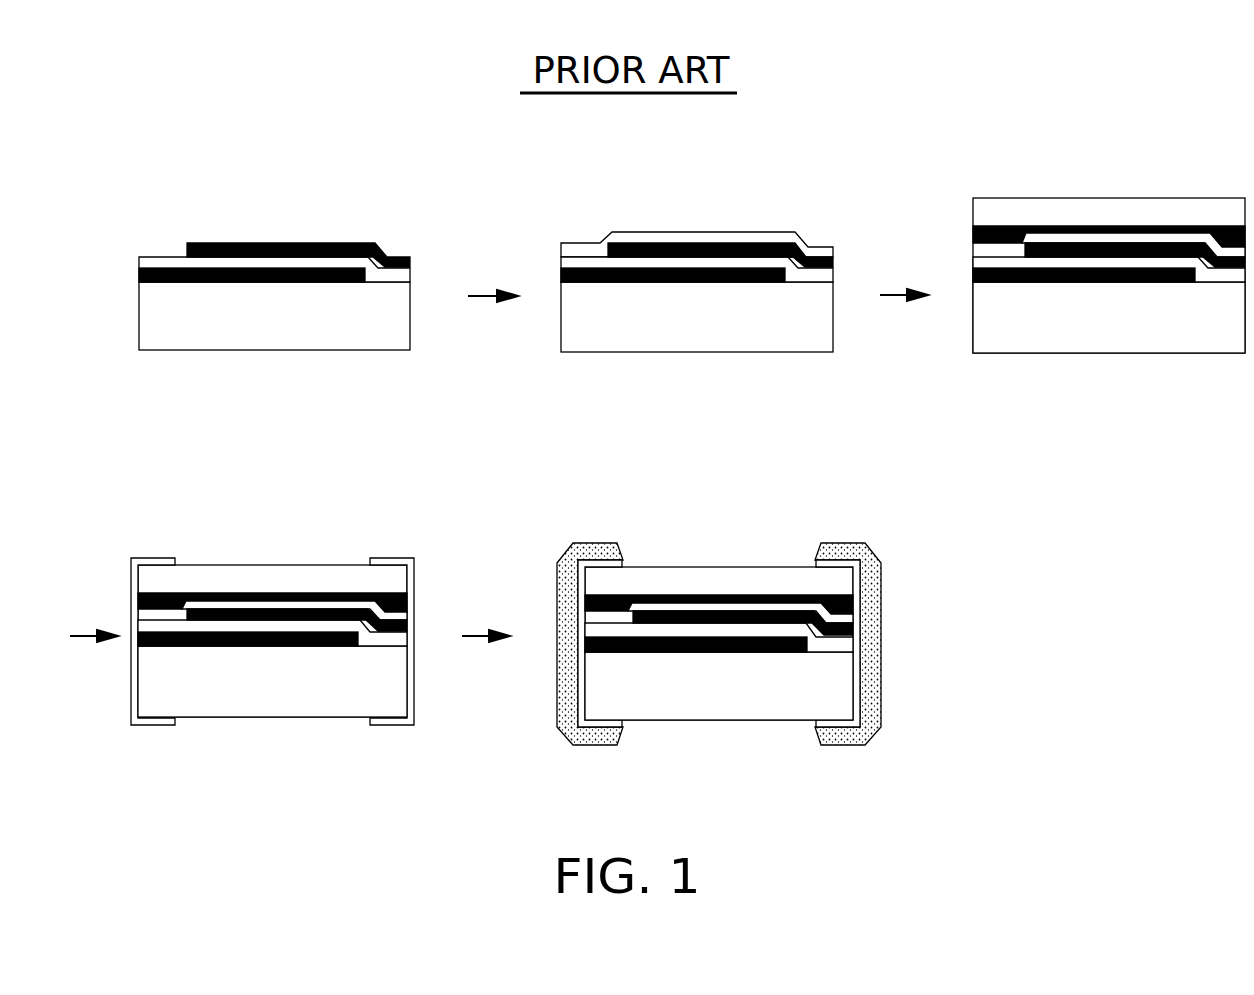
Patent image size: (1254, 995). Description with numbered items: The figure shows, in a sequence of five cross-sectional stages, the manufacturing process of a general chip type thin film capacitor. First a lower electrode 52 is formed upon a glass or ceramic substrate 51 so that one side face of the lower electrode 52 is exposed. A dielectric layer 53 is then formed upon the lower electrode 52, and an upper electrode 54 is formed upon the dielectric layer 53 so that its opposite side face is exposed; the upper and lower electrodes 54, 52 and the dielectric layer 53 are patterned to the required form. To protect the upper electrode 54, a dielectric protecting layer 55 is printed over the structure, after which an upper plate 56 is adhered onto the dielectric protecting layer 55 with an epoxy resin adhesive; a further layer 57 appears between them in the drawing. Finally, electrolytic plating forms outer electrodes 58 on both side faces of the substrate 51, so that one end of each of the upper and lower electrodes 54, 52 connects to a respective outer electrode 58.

The substrate 51 is at (306, 334).
The lower electrode 52 is at (172, 268).
The dielectric layer 53 is at (243, 262).
The upper electrode 54 is at (332, 243).
The dielectric protecting layer 55 is at (655, 232).
The upper plate 56 is at (1133, 205).
The conductive layer 57 is at (990, 225).
The outer electrodes 58 is at (566, 735).